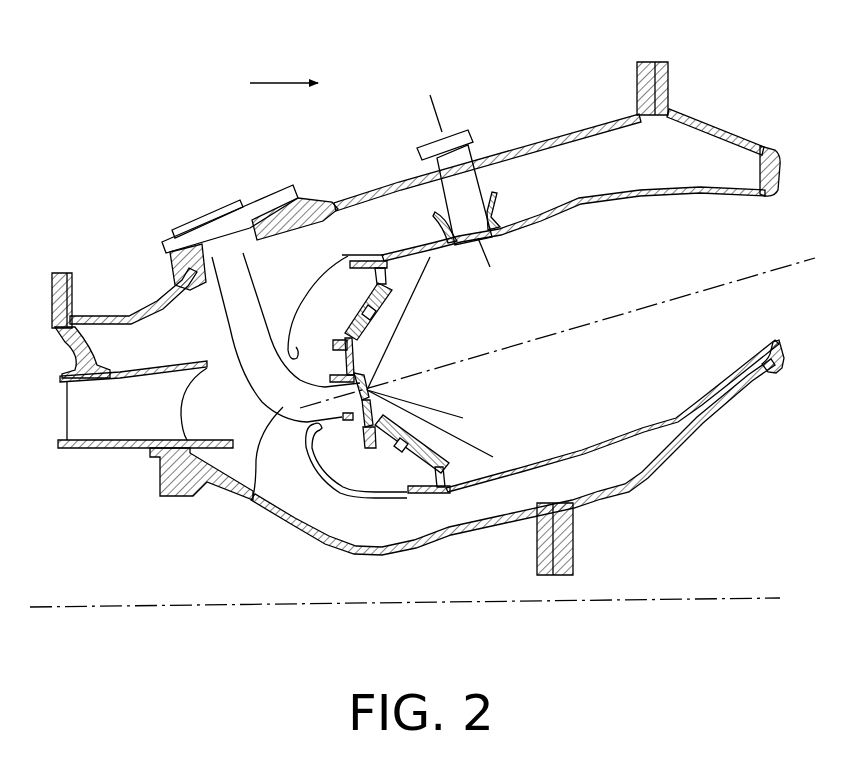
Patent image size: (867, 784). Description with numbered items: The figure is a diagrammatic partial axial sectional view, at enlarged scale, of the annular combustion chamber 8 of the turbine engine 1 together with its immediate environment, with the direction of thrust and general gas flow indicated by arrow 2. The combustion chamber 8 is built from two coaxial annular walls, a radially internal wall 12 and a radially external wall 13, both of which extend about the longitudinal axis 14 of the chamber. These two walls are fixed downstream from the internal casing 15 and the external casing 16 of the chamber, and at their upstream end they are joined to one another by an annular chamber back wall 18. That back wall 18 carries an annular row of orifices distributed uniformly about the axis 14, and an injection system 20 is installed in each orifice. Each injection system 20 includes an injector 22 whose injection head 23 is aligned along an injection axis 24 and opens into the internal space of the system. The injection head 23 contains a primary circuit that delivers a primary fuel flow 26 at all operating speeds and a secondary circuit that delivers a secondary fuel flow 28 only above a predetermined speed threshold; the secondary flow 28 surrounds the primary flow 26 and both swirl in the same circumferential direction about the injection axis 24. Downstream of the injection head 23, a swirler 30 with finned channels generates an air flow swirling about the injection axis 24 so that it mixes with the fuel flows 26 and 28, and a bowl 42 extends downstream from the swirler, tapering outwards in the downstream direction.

The turbine engine 1 is at (543, 82).
The arrow 2 is at (283, 83).
The annular combustion chamber 8 is at (732, 253).
The radially internal wall 12 is at (547, 462).
The radially external wall 13 is at (698, 194).
The longitudinal axis 14 is at (103, 605).
The internal casing 15 is at (487, 524).
The external casing 16 is at (513, 147).
The annular chamber back wall 18 is at (445, 484).
The injection system 20 is at (333, 317).
The injector 22 is at (253, 498).
The injection head 23 is at (329, 438).
The injection axis 24 is at (640, 298).
The primary fuel flow 26 is at (367, 390).
The secondary fuel flow 28 is at (433, 268).
The swirler 30 is at (381, 458).
The bowl 42 is at (355, 303).